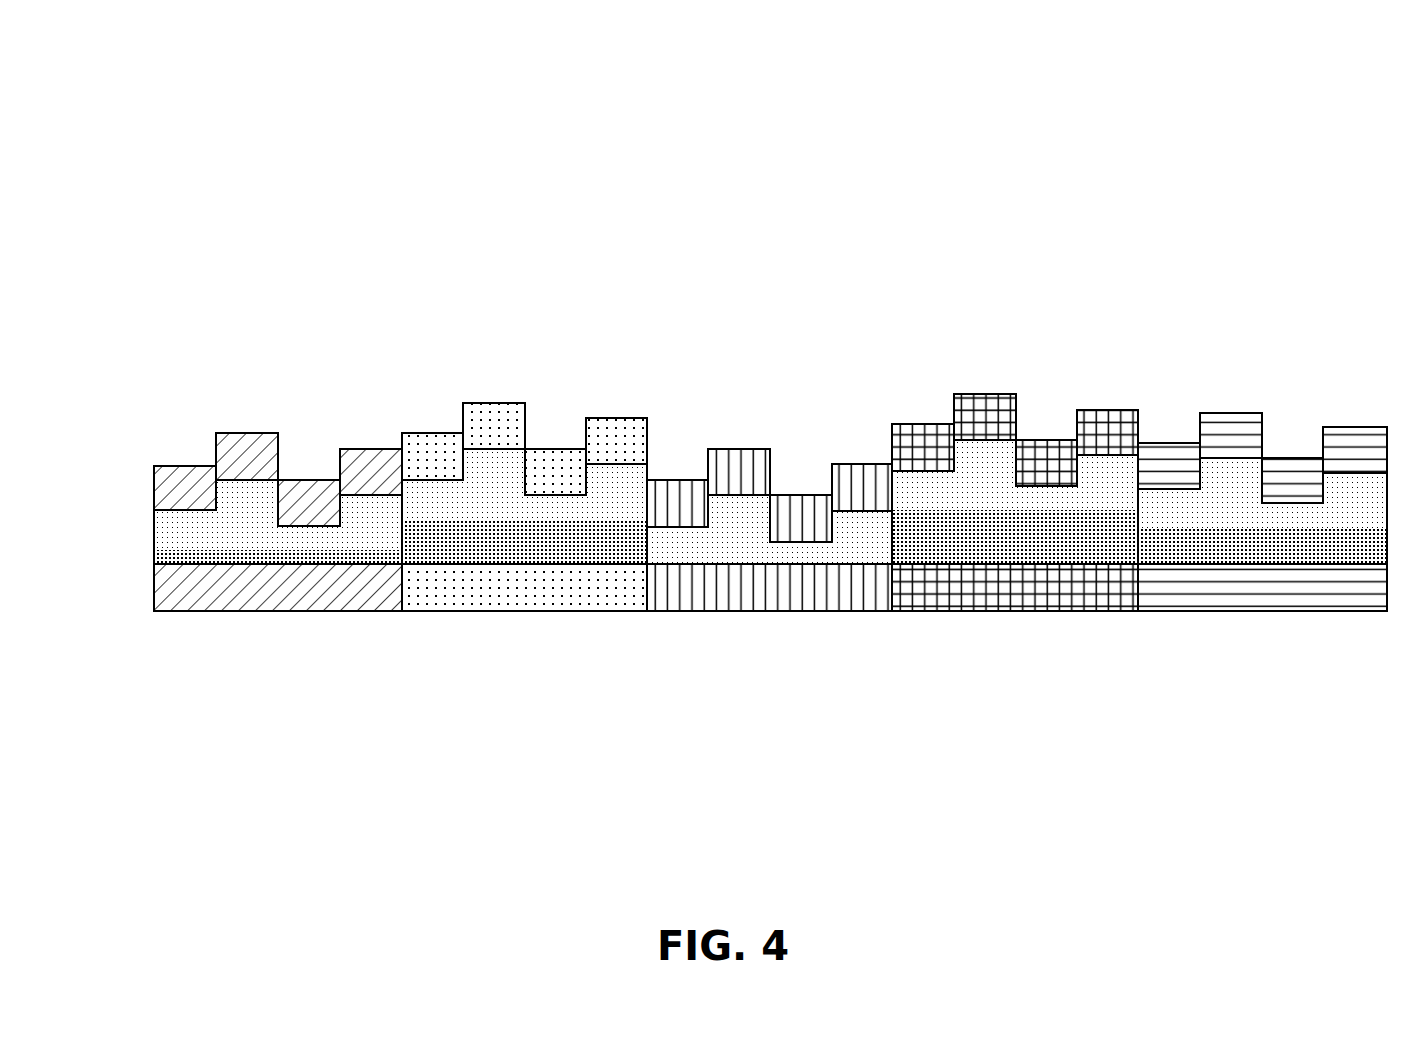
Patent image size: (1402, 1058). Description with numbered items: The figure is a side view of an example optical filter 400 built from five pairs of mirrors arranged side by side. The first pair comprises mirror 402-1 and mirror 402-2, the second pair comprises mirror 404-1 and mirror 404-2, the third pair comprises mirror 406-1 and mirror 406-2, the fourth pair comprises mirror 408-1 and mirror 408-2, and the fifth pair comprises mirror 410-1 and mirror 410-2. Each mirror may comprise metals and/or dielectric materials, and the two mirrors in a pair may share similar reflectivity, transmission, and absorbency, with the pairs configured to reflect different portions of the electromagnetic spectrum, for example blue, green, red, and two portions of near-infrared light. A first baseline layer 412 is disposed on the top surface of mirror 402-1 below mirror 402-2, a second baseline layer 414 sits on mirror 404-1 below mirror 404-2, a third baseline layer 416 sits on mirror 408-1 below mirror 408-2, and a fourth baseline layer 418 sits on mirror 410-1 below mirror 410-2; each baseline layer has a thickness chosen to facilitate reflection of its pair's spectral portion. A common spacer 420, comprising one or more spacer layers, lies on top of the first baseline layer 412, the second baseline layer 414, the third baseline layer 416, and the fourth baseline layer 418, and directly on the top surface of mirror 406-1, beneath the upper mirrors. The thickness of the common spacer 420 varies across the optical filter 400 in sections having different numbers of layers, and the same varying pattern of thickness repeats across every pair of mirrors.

The optical filter 400 is at (197, 63).
The mirror 402-1 is at (252, 612).
The mirror 402-2 is at (155, 420).
The mirror 404-1 is at (515, 612).
The mirror 404-2 is at (402, 390).
The mirror 406-1 is at (773, 612).
The mirror 406-2 is at (652, 438).
The mirror 408-1 is at (1009, 612).
The mirror 408-2 is at (893, 380).
The mirror 410-1 is at (1253, 612).
The mirror 410-2 is at (1142, 398).
The first baseline layer 412 is at (153, 553).
The second baseline layer 414 is at (496, 553).
The third baseline layer 416 is at (994, 549).
The fourth baseline layer 418 is at (1249, 559).
The common spacer 420 is at (226, 536).